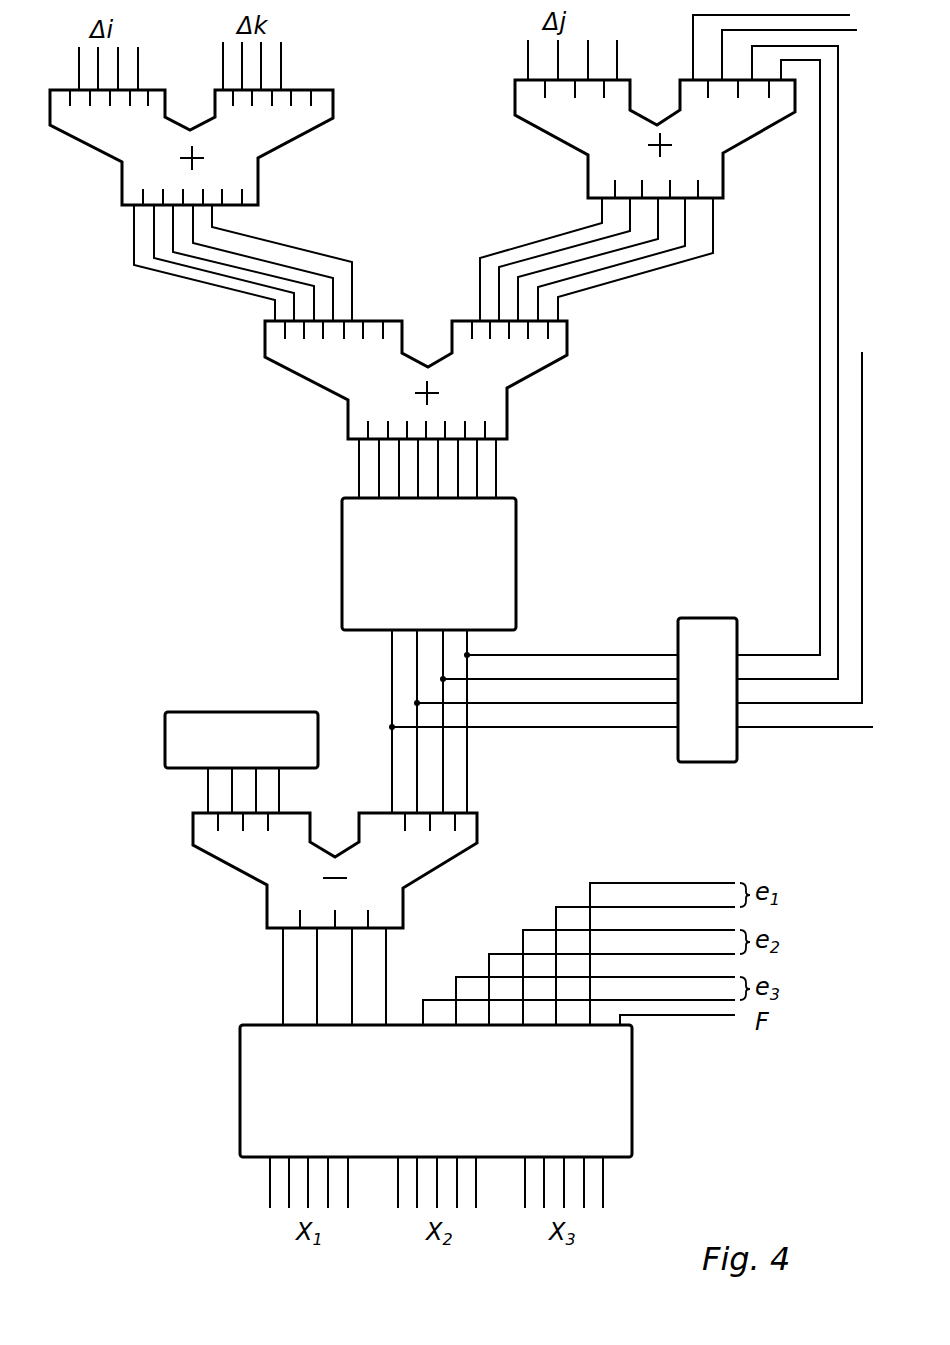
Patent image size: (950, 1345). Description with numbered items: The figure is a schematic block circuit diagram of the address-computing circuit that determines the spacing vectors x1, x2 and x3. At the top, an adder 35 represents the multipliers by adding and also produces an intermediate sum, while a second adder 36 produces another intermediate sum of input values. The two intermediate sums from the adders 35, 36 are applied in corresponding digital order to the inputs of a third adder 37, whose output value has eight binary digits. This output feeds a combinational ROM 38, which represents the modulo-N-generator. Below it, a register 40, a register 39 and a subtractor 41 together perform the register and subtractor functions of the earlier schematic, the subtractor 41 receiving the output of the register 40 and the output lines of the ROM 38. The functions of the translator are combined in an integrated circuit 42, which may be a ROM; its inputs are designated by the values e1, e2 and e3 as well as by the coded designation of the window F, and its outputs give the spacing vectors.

The adder 35 is at (255, 143).
The adder 36 is at (720, 140).
The third adder 37 is at (498, 377).
The combinational ROM 38 is at (493, 557).
The register 39 is at (716, 640).
The register 40 is at (210, 732).
The subtractor 41 is at (410, 862).
The integrated circuit 42 is at (608, 1078).